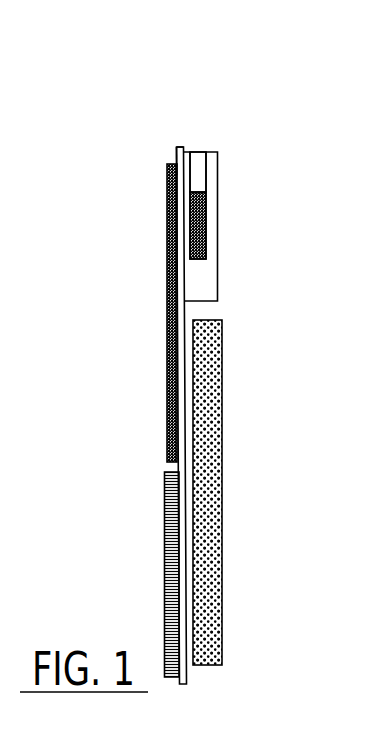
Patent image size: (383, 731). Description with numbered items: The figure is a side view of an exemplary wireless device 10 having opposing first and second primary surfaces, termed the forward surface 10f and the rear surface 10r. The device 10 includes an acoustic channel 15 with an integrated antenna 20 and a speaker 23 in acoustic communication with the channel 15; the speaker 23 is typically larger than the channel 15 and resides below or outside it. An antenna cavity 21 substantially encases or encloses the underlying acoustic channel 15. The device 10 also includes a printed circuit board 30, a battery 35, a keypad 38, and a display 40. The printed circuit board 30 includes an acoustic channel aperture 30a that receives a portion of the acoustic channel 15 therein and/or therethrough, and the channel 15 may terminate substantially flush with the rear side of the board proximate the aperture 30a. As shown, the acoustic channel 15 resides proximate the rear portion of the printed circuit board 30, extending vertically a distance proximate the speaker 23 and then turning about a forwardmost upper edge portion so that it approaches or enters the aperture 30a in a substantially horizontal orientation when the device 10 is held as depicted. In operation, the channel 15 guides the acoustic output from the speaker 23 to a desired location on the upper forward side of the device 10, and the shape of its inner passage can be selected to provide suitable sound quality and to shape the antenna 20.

The wireless device 10 is at (120, 60).
The acoustic channel 15 is at (172, 147).
The acoustic channel aperture 30a is at (176, 158).
The antenna 20 is at (198, 180).
The speaker 23 is at (201, 209).
The antenna cavity 21 is at (219, 257).
The display 40 is at (167, 330).
The forward surface 10f is at (127, 402).
The rear surface 10r is at (240, 393).
The battery 35 is at (223, 477).
The keypad 38 is at (163, 555).
The printed circuit board 30 is at (187, 684).